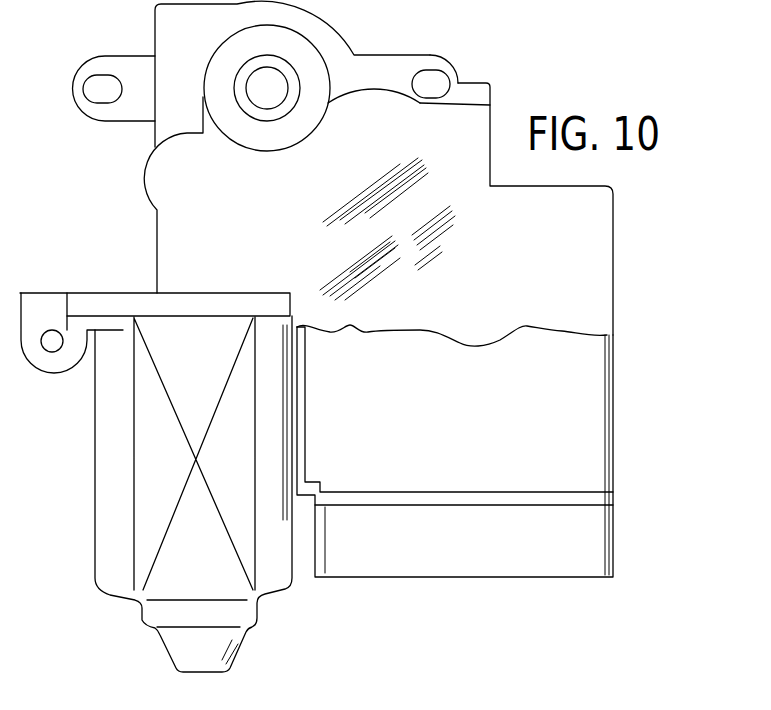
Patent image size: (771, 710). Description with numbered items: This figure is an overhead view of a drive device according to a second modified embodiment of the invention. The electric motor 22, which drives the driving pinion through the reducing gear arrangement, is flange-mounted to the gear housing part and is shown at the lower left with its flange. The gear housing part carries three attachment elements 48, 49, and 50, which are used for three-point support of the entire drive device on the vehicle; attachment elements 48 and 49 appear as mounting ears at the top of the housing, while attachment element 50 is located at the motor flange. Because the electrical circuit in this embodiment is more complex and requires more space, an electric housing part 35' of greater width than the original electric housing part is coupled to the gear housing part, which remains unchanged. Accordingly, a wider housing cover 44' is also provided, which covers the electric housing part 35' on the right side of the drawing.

The attachment element 49 is at (90, 67).
The attachment element 48 is at (438, 63).
The housing cover 44' is at (419, 173).
The electric housing part 35' is at (497, 452).
The attachment element 50 is at (50, 362).
The electric motor 22 is at (150, 500).